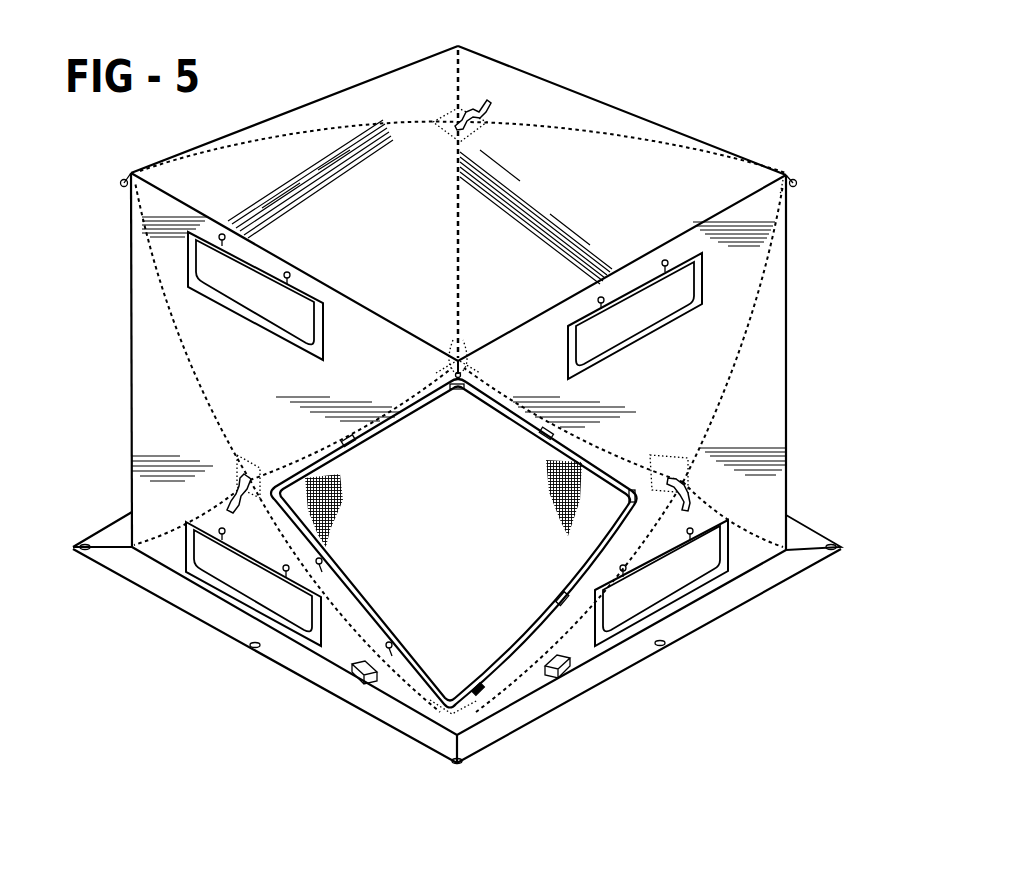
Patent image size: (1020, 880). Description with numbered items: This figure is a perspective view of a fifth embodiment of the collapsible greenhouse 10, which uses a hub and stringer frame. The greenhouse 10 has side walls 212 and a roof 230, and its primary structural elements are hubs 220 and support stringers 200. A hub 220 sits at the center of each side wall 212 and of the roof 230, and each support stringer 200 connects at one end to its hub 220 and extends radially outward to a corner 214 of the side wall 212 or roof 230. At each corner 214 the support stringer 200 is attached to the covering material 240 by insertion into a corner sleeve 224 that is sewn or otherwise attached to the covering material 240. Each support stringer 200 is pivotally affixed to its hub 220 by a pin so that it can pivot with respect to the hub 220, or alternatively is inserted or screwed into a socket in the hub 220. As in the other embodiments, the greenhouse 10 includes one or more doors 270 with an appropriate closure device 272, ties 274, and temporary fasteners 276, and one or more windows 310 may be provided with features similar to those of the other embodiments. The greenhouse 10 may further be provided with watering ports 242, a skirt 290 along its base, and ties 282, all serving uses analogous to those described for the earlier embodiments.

The greenhouse 10 is at (766, 94).
The support stringer 200 is at (559, 122).
The side wall 212 is at (645, 394).
The corner 214 is at (768, 507).
The hub 220 is at (433, 128).
The corner sleeve 224 is at (788, 192).
The roof 230 is at (590, 197).
The covering material 240 is at (767, 376).
The watering port 242 is at (562, 669).
The door 270 is at (440, 552).
The closure device 272 is at (513, 660).
The tie 274 is at (389, 650).
The temporary fastener 276 is at (480, 693).
The tie 282 is at (473, 100).
The skirt 290 is at (309, 665).
The window 310 is at (615, 319).